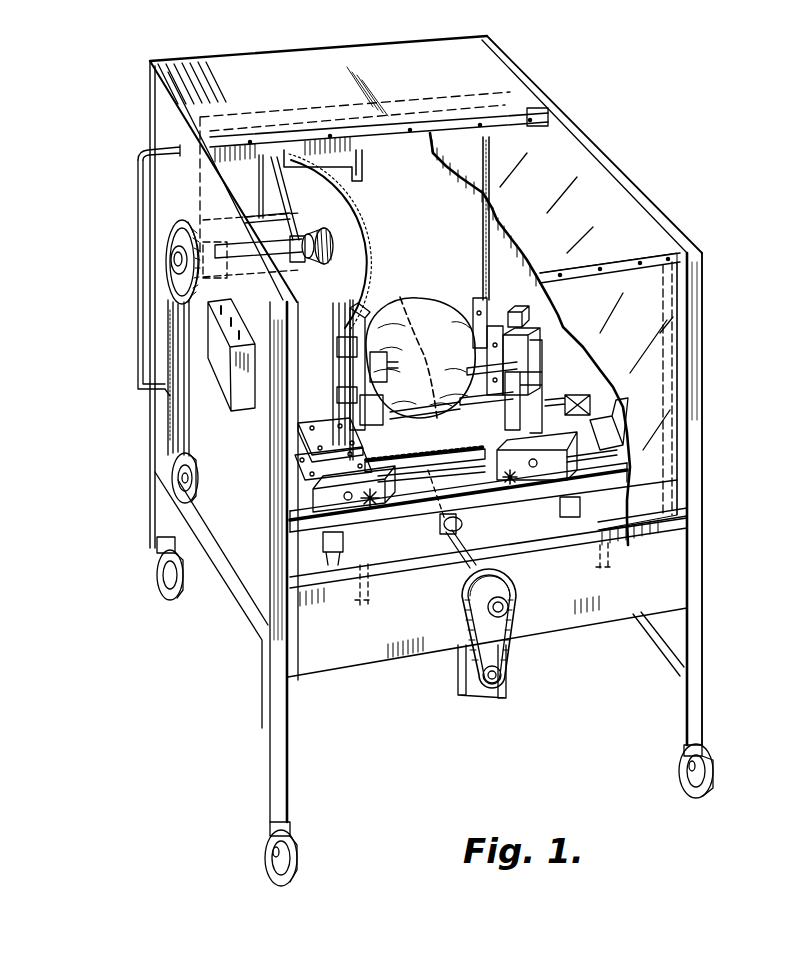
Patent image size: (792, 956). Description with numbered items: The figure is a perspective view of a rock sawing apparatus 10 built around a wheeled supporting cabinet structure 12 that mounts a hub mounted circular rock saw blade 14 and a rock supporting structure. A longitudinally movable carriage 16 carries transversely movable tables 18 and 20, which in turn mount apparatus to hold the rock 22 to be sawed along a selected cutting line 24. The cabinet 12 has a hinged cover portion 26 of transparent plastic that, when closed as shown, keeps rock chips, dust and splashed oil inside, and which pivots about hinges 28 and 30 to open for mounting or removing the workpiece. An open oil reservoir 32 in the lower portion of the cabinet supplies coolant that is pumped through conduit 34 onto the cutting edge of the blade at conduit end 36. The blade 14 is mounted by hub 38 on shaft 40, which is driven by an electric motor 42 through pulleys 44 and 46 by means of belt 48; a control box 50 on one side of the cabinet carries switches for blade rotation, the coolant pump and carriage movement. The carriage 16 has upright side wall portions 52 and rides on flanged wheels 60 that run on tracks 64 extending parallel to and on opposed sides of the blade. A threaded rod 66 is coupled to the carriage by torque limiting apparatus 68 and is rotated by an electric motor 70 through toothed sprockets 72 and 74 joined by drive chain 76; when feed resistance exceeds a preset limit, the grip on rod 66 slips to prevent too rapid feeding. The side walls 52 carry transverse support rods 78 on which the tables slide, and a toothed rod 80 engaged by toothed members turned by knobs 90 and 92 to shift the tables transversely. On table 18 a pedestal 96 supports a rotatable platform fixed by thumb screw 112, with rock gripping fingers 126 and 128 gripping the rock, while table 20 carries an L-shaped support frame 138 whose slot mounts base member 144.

The rock sawing apparatus 10 is at (620, 154).
The wheeled supporting cabinet structure 12 is at (702, 388).
The circular rock saw blade 14 is at (362, 214).
The carriage 16 is at (588, 404).
The transversely movable table 18 is at (543, 512).
The transversely movable table 20 is at (300, 517).
The rock 22 is at (415, 310).
The selected cutting line 24 is at (400, 297).
The hinged cover portion 26 is at (587, 213).
The hinge 28 is at (647, 267).
The hinge 30 is at (527, 120).
The open oil reservoir 32 is at (400, 548).
The conduit 34 is at (138, 155).
The conduit end 36 is at (360, 179).
The hub 38 is at (323, 229).
The shaft 40 is at (271, 252).
The electric motor 42 is at (196, 511).
The pulley 44 is at (177, 458).
The pulley 46 is at (166, 240).
The belt 48 is at (168, 330).
The control box 50 is at (240, 393).
The upright side wall portions 52 is at (623, 430).
The flanged wheels 60 is at (330, 555).
The tracks 64 is at (365, 568).
The threaded rod 66 is at (463, 537).
The torque limiting apparatus 68 is at (433, 560).
The electric motor 70 is at (453, 650).
The toothed sprocket 72 is at (503, 673).
The toothed sprocket 74 is at (517, 603).
The drive chain 76 is at (510, 647).
The transverse support rods 78 is at (557, 393).
The toothed rod 80 is at (590, 403).
The knob 90 is at (517, 500).
The knob 92 is at (350, 528).
The pedestal 96 is at (541, 340).
The thumb screw 112 is at (519, 308).
The rock gripping finger 126 is at (470, 400).
The rock gripping finger 128 is at (468, 370).
The L-shaped support frame 138 is at (343, 368).
The base member 144 is at (380, 352).